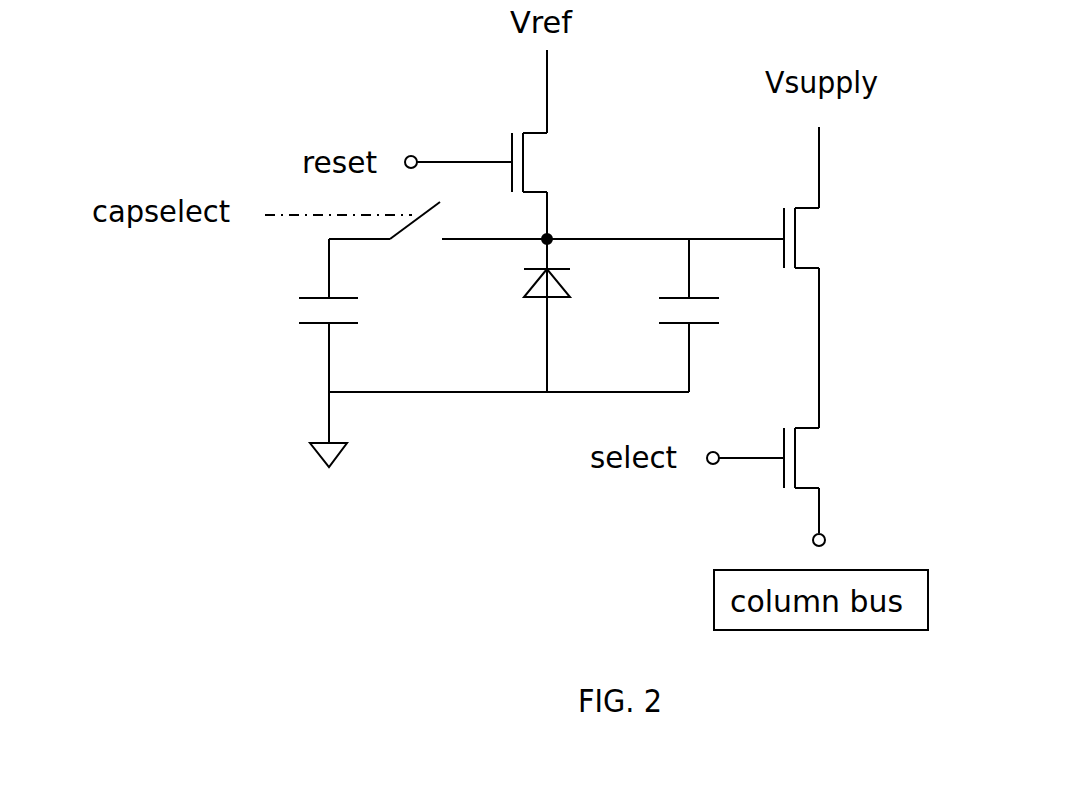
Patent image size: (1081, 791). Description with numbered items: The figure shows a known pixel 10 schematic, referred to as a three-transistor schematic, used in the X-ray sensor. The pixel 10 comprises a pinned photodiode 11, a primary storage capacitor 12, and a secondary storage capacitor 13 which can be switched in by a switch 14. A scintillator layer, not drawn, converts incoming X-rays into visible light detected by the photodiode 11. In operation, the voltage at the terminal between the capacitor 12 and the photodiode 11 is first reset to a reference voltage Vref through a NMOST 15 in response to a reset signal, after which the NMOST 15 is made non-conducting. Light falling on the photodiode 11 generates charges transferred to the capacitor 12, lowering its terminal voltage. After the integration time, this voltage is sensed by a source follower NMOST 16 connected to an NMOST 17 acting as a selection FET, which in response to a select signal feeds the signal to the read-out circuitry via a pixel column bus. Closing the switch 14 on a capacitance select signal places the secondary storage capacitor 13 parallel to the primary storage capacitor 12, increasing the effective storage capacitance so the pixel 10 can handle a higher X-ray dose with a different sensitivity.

The pixel 10 is at (955, 119).
The photodiode 11 is at (541, 312).
The primary storage capacitor 12 is at (720, 312).
The secondary storage capacitor 13 is at (285, 315).
The switch 14 is at (412, 235).
The NMOST 15 is at (535, 166).
The source follower NMOST 16 is at (805, 242).
The NMOST 17 is at (805, 462).